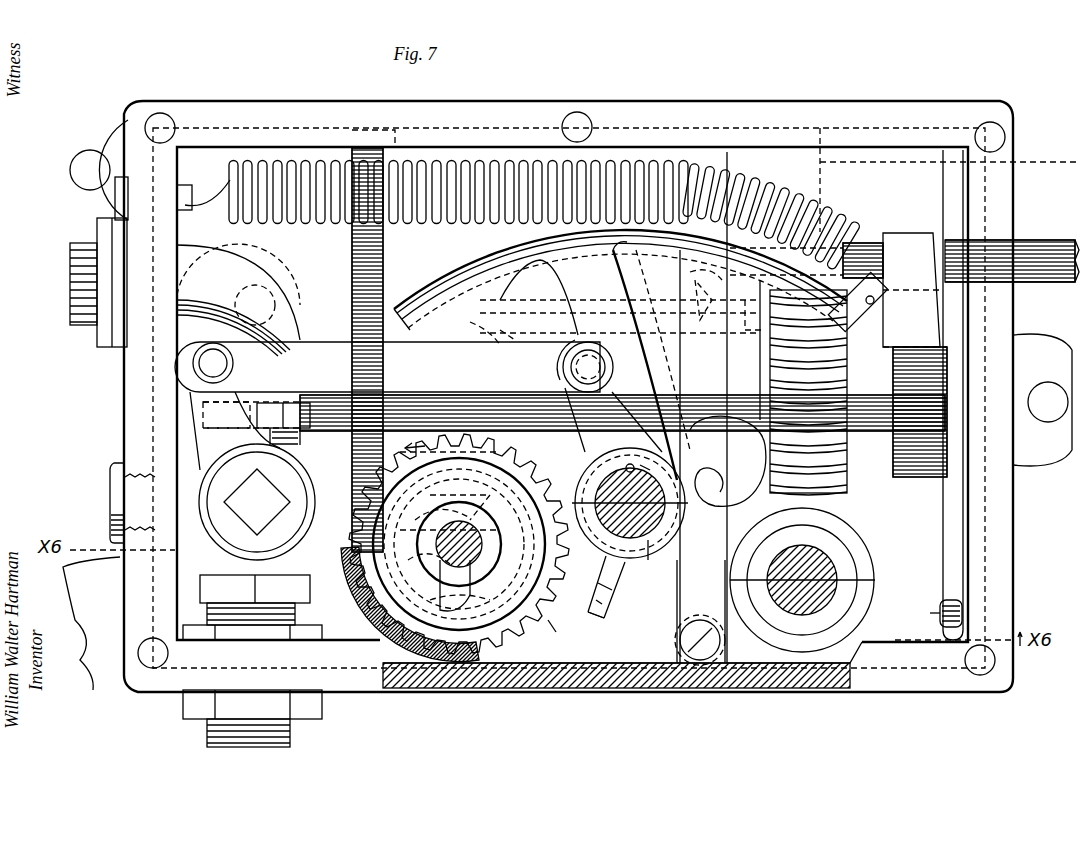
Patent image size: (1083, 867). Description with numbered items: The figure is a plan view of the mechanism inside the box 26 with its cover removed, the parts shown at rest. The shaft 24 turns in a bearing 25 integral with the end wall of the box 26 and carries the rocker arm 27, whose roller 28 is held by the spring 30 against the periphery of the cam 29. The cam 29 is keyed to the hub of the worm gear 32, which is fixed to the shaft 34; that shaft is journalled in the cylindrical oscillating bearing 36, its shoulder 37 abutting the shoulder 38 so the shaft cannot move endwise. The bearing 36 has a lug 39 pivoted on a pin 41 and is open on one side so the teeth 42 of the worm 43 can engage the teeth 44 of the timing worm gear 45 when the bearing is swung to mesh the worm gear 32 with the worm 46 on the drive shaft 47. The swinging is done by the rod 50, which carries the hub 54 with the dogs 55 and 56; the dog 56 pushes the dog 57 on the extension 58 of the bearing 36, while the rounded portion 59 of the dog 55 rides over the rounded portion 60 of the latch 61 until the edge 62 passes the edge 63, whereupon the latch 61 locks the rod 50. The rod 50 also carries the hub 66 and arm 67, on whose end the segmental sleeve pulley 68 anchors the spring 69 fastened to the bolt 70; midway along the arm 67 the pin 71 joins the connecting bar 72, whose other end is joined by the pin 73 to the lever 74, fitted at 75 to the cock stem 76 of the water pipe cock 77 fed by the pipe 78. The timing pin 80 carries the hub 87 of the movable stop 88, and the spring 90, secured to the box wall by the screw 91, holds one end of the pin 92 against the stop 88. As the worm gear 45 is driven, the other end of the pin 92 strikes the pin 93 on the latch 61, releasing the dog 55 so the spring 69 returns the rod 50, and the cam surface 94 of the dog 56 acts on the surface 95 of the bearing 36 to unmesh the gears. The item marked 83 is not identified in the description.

The shaft 24 is at (1072, 170).
The bearing 25 is at (1040, 142).
The box 26 is at (614, 102).
The rocker arm 27 is at (947, 525).
The roller 28 is at (910, 318).
The cam 29 is at (905, 236).
The spring 30 is at (934, 613).
The worm gear 32 is at (808, 401).
The shaft 34 is at (751, 350).
The oscillating bearing 36 is at (645, 305).
The shoulder 37 is at (705, 310).
The shoulder 38 is at (700, 288).
The lug 39 is at (265, 280).
The pin 41 is at (275, 305).
The teeth 42 is at (492, 325).
The worm 43 is at (518, 332).
The teeth 44 is at (525, 458).
The timing worm gear 45 is at (540, 462).
The worm 46 is at (850, 545).
The drive shaft 47 is at (830, 570).
The rod 50 is at (632, 560).
The hub 54 is at (598, 585).
The dog 55 is at (612, 595).
The dog 56 is at (685, 478).
The dog 57 is at (680, 466).
The extension 58 is at (728, 461).
The rounded portion 59 is at (582, 611).
The rounded portion 60 is at (500, 552).
The latch 61 is at (543, 462).
The edge 62 is at (596, 618).
The edge 63 is at (545, 478).
The hub 66 is at (650, 560).
The arm 67 is at (633, 361).
The segmental sleeve pulley 68 is at (470, 258).
The spring 69 is at (300, 226).
The bolt 70 is at (188, 190).
The pin 71 is at (563, 362).
The connecting bar 72 is at (387, 367).
The pin 73 is at (193, 364).
The lever 74 is at (235, 431).
The fitting 75 is at (262, 480).
The cock stem 76 is at (257, 502).
The water pipe cock 77 is at (300, 468).
The pipe 78 is at (292, 735).
The timing pin 80 is at (437, 548).
The pin 83 is at (553, 637).
The hub 87 is at (485, 570).
The movable stop 88 is at (437, 575).
The spring 90 is at (384, 275).
The screw 91 is at (395, 135).
The pin 92 is at (451, 551).
The pin 93 is at (465, 485).
The cam surface 94 is at (609, 396).
The surface 95 is at (665, 450).